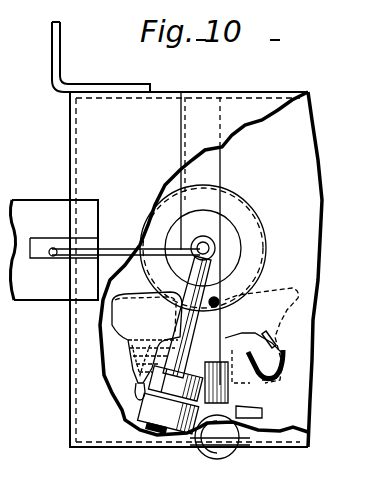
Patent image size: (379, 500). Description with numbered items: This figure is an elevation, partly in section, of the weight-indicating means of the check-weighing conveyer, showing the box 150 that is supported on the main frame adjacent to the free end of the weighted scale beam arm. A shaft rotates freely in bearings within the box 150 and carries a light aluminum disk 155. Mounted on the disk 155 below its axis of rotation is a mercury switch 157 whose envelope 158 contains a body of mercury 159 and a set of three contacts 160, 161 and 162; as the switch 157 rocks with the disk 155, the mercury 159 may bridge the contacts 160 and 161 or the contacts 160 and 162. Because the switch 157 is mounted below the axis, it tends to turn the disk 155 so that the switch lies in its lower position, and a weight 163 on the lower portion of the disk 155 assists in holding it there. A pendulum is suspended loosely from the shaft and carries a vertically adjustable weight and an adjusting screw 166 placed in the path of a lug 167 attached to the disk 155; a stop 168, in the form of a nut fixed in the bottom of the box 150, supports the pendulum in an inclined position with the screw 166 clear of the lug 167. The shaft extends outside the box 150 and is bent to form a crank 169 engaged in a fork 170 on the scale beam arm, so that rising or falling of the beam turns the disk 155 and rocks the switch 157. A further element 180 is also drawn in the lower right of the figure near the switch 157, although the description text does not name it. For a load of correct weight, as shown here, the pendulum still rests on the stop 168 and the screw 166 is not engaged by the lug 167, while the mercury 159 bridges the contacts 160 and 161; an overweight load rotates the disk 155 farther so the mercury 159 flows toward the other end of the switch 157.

The box 150 is at (75, 121).
The disk 155 is at (238, 248).
The mercury switch 157 is at (278, 292).
The envelope 158 is at (116, 322).
The body of mercury 159 is at (135, 352).
The contact 160 is at (232, 393).
The contact 161 is at (130, 382).
The contact 162 is at (276, 342).
The weight 163 is at (262, 413).
The adjusting screw 166 is at (190, 263).
The lug 167 is at (227, 271).
The stop 168 is at (235, 447).
The crank 169 is at (53, 258).
The fork 170 is at (33, 212).
The spring hook 180 is at (283, 380).